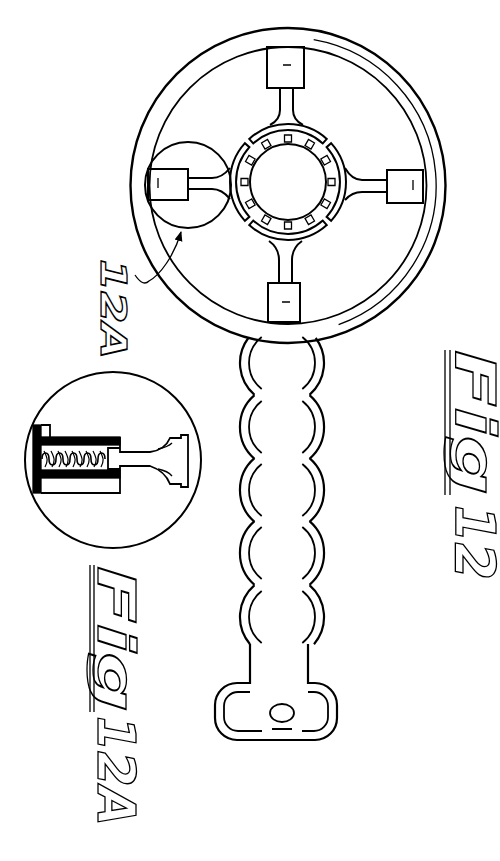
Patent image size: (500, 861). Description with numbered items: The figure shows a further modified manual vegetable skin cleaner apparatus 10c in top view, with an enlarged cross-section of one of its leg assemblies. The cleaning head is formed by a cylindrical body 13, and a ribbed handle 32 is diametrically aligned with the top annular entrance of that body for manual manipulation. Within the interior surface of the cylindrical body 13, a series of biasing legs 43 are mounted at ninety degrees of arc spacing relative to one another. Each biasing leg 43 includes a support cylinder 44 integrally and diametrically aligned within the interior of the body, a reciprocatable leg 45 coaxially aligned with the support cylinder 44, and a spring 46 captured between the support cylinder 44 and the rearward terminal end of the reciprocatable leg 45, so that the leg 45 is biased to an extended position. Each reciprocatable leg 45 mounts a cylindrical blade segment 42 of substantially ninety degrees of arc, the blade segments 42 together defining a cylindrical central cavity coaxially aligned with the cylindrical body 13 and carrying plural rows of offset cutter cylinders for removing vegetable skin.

In FIG. 12, the manual cleaner apparatus 10c is at (288, 384).
In FIG. 12, the cylindrical body 13 is at (355, 327).
In FIG. 12, the ribbed handle 32 is at (318, 430).
In FIG. 12, the cylindrical blade segment 42 is at (271, 121).
In FIG. 12, the biasing legs 43 is at (372, 176).
In FIG. 12A, the biasing legs 43 is at (93, 494).
In FIG. 12A, the support cylinder 44 is at (72, 437).
In FIG. 12A, the reciprocatable leg 45 is at (138, 452).
In FIG. 12A, the spring 46 is at (104, 448).